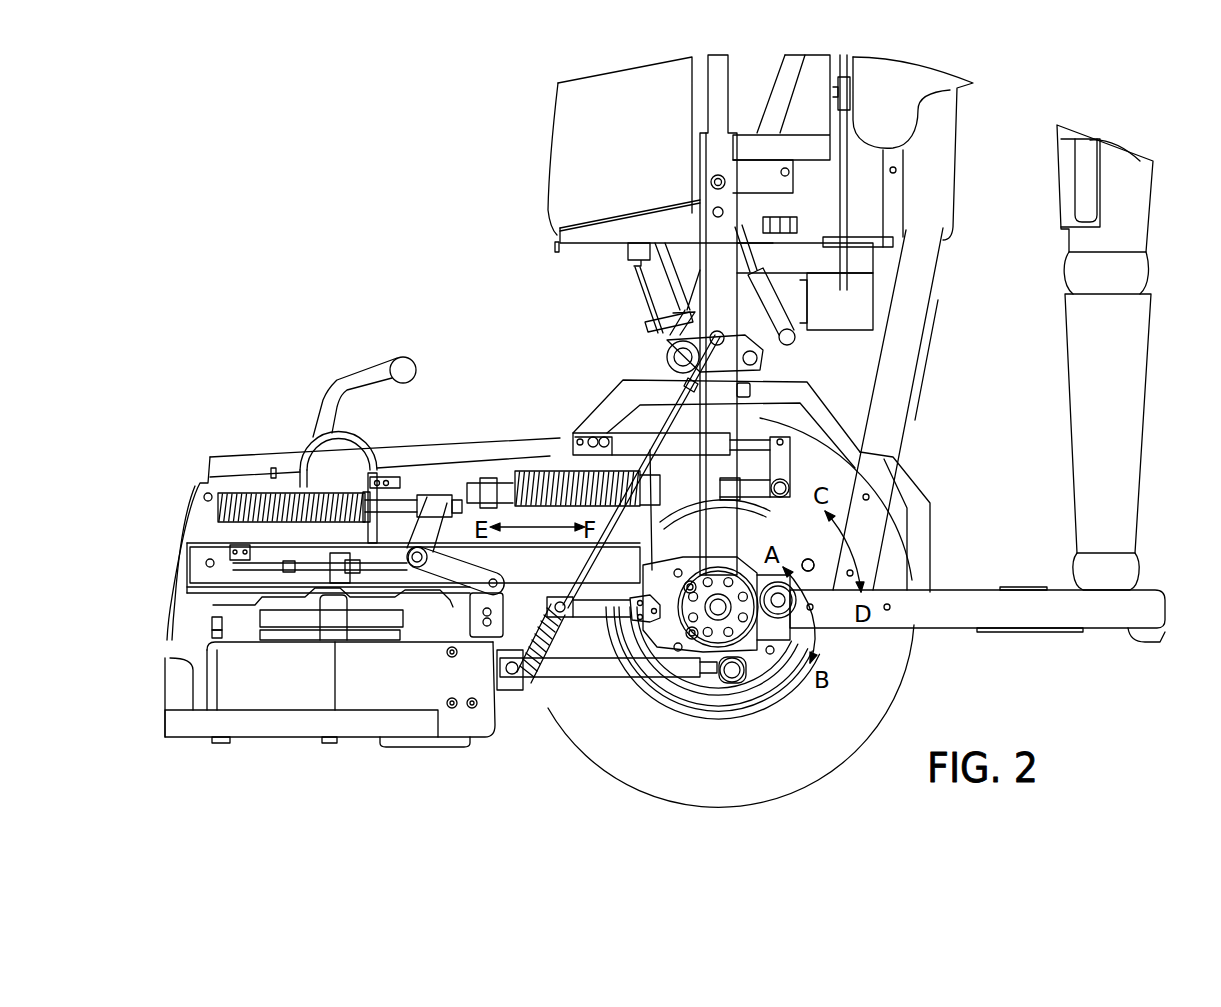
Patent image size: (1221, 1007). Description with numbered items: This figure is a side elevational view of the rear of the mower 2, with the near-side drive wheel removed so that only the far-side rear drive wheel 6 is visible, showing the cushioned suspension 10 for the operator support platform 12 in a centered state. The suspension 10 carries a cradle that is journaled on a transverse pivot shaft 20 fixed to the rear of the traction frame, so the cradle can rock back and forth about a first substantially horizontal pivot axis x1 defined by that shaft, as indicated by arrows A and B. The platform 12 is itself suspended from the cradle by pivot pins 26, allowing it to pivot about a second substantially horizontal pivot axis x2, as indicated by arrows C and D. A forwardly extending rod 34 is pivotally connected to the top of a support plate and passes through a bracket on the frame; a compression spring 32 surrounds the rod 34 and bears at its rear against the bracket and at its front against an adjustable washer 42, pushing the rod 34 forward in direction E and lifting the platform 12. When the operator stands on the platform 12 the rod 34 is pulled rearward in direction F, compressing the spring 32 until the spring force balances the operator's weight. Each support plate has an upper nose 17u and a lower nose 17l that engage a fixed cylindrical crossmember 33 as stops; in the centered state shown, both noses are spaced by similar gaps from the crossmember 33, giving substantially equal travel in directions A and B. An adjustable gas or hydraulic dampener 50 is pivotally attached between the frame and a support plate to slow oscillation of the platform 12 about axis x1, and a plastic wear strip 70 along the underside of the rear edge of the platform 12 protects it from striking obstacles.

The mower 2 is at (491, 338).
The cushioned suspension 10 is at (544, 390).
The rear drive wheel 6 is at (898, 719).
The operator support platform 12 is at (1017, 612).
The plastic wear strip 70 is at (1150, 638).
The transverse pivot axle or shaft 20 is at (775, 625).
The upper nose 17u is at (779, 582).
The lower nose 17l is at (724, 676).
The pivot pin 26 is at (812, 572).
The fixed cylindrical crossmember 33 is at (700, 652).
The forwardly extending rod 34 is at (490, 487).
The washer 42 is at (516, 492).
The compression spring 32 is at (557, 470).
The adjustable gas or hydraulic dampener 50 is at (700, 443).
The first substantially horizontal pivot axis x1 is at (772, 655).
The second substantially horizontal pivot axis x2 is at (805, 560).